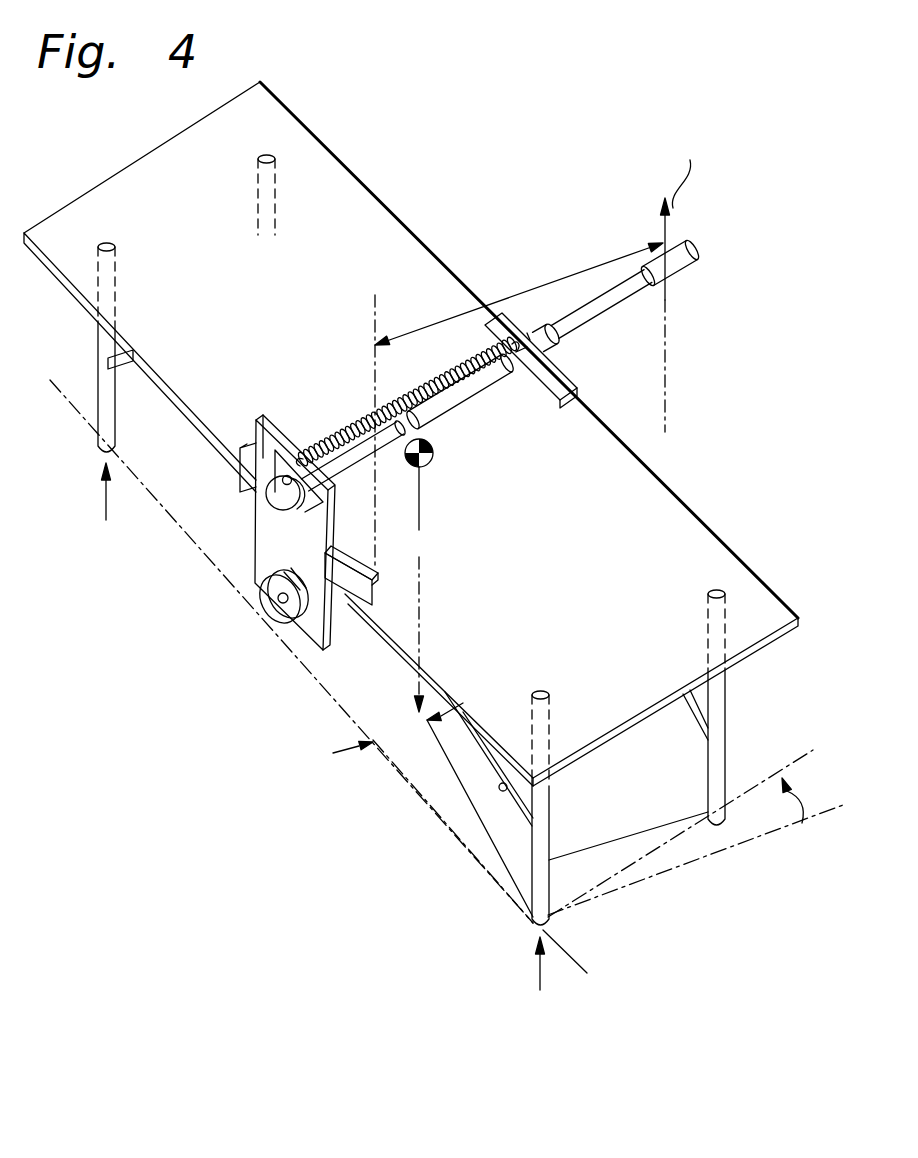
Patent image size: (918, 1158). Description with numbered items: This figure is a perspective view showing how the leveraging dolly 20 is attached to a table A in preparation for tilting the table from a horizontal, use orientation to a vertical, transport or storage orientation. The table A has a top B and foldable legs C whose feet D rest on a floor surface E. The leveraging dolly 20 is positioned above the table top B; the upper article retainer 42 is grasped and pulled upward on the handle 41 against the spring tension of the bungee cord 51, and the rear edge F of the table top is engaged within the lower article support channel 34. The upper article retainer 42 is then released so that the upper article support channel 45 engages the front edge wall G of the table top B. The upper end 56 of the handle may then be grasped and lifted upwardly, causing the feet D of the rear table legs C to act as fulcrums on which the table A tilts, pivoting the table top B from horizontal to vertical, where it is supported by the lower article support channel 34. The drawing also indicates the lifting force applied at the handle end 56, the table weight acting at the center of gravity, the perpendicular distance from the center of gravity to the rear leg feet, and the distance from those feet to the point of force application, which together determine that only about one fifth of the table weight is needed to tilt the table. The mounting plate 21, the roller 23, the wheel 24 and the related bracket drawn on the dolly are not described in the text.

The leveraging dolly 20 is at (574, 250).
The mounting bracket plate 21 is at (250, 562).
The pivot roller 23 is at (267, 508).
The wheel 24 is at (278, 612).
The lower article support channel 34 is at (352, 600).
The handle 41 is at (602, 308).
The upper article retainer 42 is at (592, 371).
The upper article support channel 45 is at (555, 368).
The bungee cord 51 is at (300, 450).
The upper end of handle 56 is at (719, 220).
The table A is at (295, 90).
The table top B is at (317, 167).
The foldable legs C is at (100, 447).
The feet D is at (102, 455).
The floor surface E is at (803, 855).
The rear edge of table top F is at (43, 260).
The front edge wall of table top G is at (366, 186).